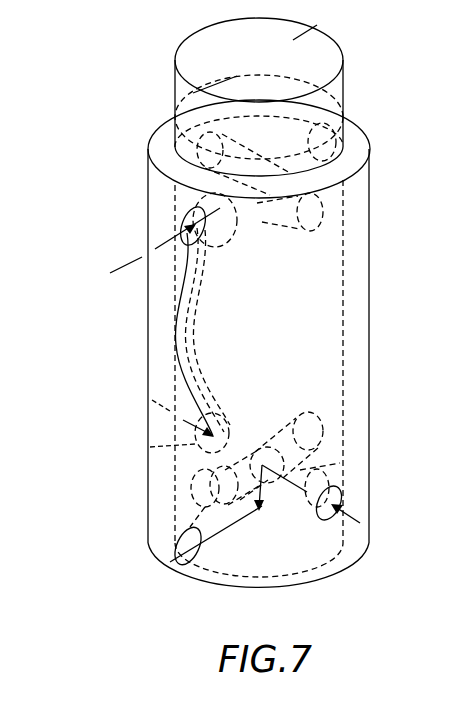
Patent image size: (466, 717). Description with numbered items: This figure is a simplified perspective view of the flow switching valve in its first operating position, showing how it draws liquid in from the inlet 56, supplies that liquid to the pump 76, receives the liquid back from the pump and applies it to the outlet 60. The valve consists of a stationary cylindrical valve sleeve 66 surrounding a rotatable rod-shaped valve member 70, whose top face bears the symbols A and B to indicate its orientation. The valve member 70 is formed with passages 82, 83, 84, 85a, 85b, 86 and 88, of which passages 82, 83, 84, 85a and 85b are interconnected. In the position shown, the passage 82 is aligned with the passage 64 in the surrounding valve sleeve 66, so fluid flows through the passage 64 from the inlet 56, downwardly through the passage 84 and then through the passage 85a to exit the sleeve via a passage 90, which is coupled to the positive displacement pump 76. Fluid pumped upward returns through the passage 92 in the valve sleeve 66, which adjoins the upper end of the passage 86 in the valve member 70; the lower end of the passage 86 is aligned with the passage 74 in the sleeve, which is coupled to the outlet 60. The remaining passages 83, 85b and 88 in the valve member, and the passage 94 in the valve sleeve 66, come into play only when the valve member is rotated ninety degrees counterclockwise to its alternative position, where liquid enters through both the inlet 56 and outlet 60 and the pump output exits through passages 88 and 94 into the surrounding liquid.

The cylindrical valve sleeve 66 is at (370, 231).
The rod-shaped valve member 70 is at (188, 47).
The passage 94 is at (361, 145).
The passage 88 is at (290, 219).
The passage 92 is at (187, 215).
The passage 86 is at (205, 262).
The passage 74 is at (172, 437).
The passage 85b is at (242, 447).
The passage 83 is at (285, 420).
The passage 82 is at (305, 470).
The passage 64 is at (342, 494).
The passage 84 is at (277, 510).
The passage 85a is at (236, 535).
The passage 90 is at (193, 562).
The positive displacement pump 76 is at (128, 585).
The outlet 60 is at (140, 393).
The inlet 56 is at (372, 533).